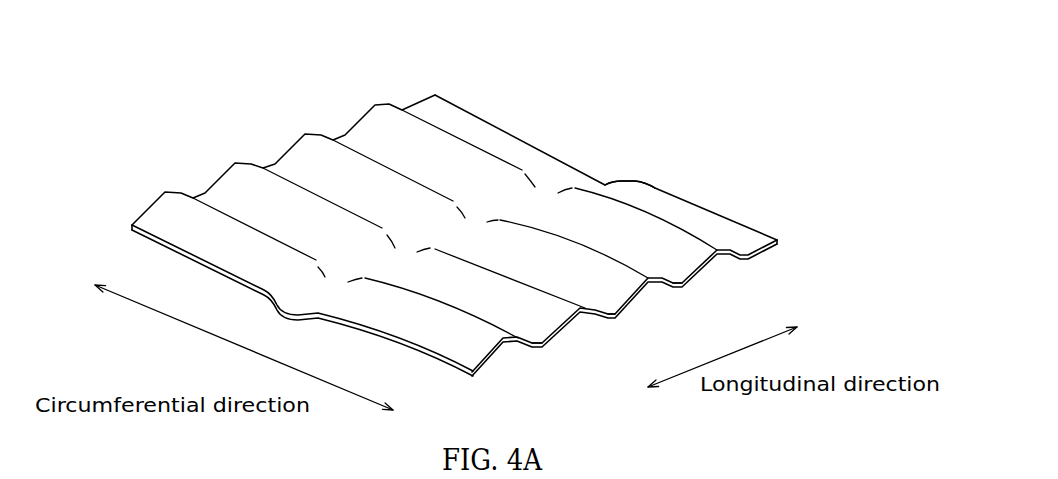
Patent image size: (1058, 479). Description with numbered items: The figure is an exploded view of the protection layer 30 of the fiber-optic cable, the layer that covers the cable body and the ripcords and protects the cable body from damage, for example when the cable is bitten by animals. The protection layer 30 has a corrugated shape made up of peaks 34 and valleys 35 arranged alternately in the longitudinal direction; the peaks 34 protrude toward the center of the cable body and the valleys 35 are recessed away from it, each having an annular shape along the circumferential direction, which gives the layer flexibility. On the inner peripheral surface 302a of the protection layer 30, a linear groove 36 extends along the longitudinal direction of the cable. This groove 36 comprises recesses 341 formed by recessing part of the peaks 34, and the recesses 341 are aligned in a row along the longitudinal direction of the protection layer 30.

The protection layer 30 is at (720, 212).
The inner peripheral surface 302a is at (158, 217).
The peaks 34 is at (165, 192).
The recesses 341 is at (333, 280).
The valleys 35 is at (537, 338).
The groove 36 is at (572, 173).